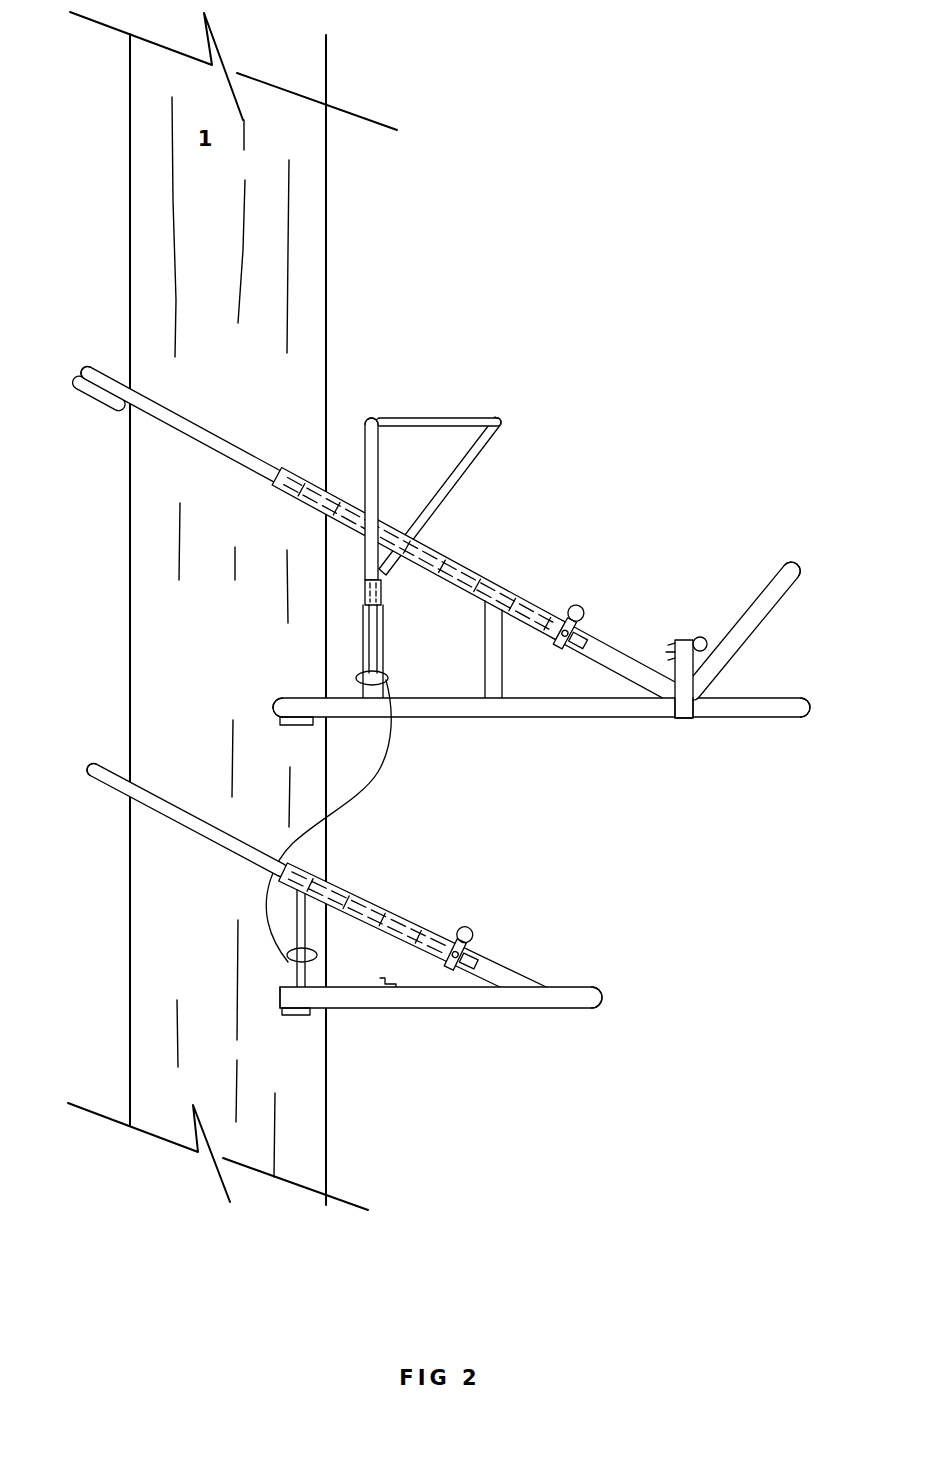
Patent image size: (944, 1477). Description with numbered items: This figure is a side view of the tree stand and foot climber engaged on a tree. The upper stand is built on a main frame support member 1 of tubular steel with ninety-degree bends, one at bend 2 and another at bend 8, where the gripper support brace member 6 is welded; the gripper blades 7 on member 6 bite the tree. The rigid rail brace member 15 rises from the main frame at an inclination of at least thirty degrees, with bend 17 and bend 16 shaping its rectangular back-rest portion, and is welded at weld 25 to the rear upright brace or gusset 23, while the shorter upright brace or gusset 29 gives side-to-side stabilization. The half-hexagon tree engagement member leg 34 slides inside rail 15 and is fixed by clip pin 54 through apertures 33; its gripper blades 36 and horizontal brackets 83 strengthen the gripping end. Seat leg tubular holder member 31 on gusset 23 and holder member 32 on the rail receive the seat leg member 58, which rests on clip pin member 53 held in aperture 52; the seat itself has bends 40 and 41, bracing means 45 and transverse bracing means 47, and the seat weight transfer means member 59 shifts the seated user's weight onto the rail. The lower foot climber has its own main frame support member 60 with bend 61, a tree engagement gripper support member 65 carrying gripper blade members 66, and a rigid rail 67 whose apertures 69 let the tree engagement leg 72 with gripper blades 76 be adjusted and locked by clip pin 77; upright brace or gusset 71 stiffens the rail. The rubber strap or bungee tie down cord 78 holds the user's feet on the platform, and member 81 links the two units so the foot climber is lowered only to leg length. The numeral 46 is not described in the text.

The main frame support member 1 is at (529, 720).
The bend 2 is at (809, 699).
The gripper support brace member 6 is at (273, 721).
The tree engagement gripper blades 7 is at (294, 727).
The bend 8 is at (281, 696).
The rigid rail brace member 15 is at (612, 657).
The bend 16 is at (718, 676).
The bend 17 is at (806, 561).
The rear upright brace or gusset 23 is at (387, 646).
The weld 25 is at (347, 535).
The upright brace or gusset 29 is at (502, 681).
The seat leg tubular holder member 31 is at (383, 596).
The seat leg tubular holder member 32 is at (684, 717).
The apertures 33 is at (499, 581).
The tree engagement member leg 34 is at (212, 431).
The tree engagement gripper blades 36 is at (112, 360).
The bend 40 is at (366, 420).
The bend 41 is at (506, 417).
The bracing means 45 is at (466, 477).
The post top 46 is at (382, 419).
The transverse bracing means 47 is at (418, 430).
The aperture 52 is at (678, 638).
The clip pin member 53 is at (701, 636).
The clip pin 54 is at (583, 616).
The seat leg member 58 is at (364, 633).
The seat weight transfer means member 59 is at (425, 547).
The main frame support member 60 is at (500, 1012).
The bend 61 is at (606, 995).
The tree engagement gripper support member 65 is at (279, 992).
The gripper blade members 66 is at (293, 1018).
The rigid rail 67 is at (348, 882).
The apertures 69 is at (395, 912).
The upright brace or gusset 71 is at (295, 937).
The tree engagement leg 72 is at (188, 828).
The gripper blades 76 is at (106, 760).
The clip pin 77 is at (468, 929).
The rubber strap or bungee tie down cord 78 is at (381, 979).
The member 81 is at (375, 782).
The horizontal brackets 83 is at (96, 398).